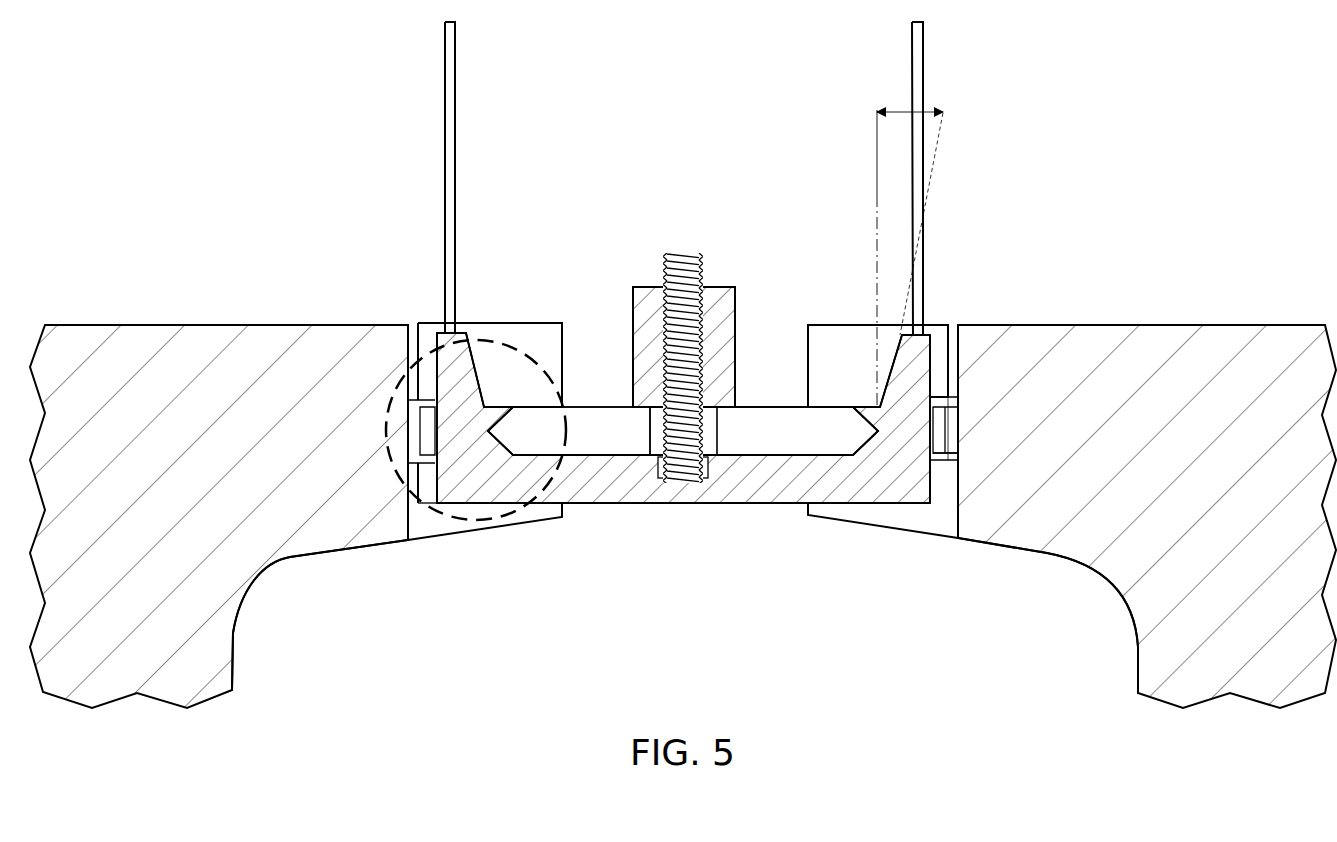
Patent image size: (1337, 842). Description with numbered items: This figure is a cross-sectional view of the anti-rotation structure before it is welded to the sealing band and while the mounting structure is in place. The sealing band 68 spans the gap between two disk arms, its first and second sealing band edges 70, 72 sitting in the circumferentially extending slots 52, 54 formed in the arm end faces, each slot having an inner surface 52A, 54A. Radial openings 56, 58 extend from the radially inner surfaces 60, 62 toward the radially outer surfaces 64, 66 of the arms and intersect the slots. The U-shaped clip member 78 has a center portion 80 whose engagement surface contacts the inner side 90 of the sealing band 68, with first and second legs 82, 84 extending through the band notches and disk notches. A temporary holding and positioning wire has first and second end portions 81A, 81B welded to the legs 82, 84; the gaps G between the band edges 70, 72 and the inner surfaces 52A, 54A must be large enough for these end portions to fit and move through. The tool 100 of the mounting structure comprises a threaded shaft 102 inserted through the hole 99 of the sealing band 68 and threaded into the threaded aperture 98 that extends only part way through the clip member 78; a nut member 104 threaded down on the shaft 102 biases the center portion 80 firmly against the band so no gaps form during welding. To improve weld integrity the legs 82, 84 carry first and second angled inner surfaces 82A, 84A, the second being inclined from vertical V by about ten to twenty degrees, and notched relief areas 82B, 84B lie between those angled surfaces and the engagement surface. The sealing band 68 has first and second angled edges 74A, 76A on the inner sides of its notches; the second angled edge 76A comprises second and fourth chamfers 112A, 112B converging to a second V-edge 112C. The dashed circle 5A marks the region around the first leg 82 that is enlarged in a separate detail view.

The circumferentially extending slot 52 is at (400, 442).
The inner surface 52A is at (428, 450).
The circumferentially extending slot 54 is at (953, 455).
The inner surface 54A is at (957, 455).
The radial opening 56 is at (508, 333).
The radial opening 58 is at (831, 333).
The radially inner surface 60 is at (470, 530).
The radially inner surface 62 is at (933, 540).
The radially outer surface 64 is at (418, 333).
The radially outer surface 66 is at (940, 325).
The sealing band 68 is at (745, 405).
The first sealing band edge 70 is at (420, 425).
The second sealing band edge 72 is at (947, 425).
The first angled edge 74A is at (497, 405).
The second angled edge 76A is at (867, 405).
The clip member 78 is at (650, 510).
The center portion 80 is at (532, 485).
The first end portion 81A is at (445, 125).
The second end portion 81B is at (923, 65).
The first leg 82 is at (447, 362).
The first angled inner surface 82A is at (483, 365).
The notched relief area 82B is at (478, 450).
The second leg 84 is at (925, 360).
The second angled inner surface 84A is at (903, 348).
The notched relief area 84B is at (883, 445).
The inner side 90 is at (610, 462).
The threaded aperture 98 is at (717, 478).
The hole 99 is at (653, 440).
The tool 100 is at (664, 337).
The threaded shaft 102 is at (690, 253).
The nut member 104 is at (633, 300).
The second chamfer 112A is at (955, 398).
The fourth chamfer 112B is at (877, 460).
The second V-edge 112C is at (887, 432).
The vertical V is at (877, 228).
The gap G is at (413, 405).
The detail view indicator 5A is at (397, 385).